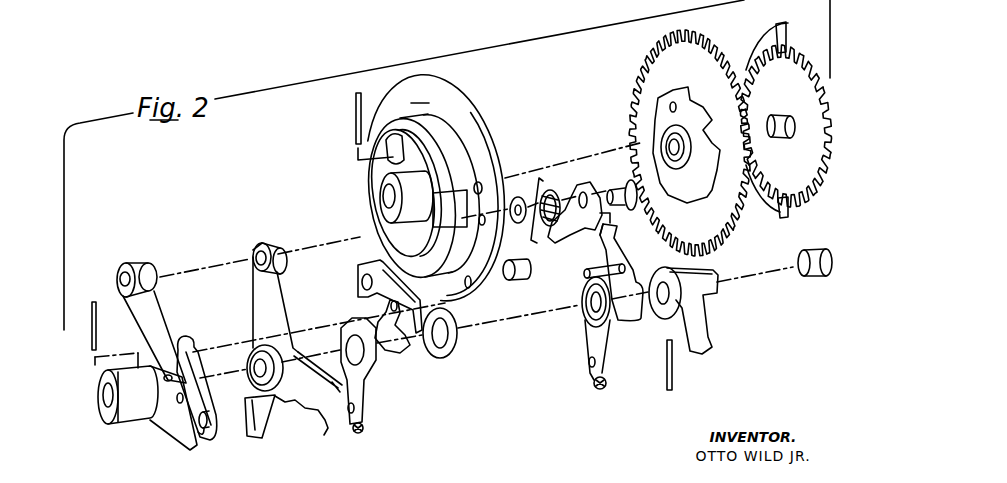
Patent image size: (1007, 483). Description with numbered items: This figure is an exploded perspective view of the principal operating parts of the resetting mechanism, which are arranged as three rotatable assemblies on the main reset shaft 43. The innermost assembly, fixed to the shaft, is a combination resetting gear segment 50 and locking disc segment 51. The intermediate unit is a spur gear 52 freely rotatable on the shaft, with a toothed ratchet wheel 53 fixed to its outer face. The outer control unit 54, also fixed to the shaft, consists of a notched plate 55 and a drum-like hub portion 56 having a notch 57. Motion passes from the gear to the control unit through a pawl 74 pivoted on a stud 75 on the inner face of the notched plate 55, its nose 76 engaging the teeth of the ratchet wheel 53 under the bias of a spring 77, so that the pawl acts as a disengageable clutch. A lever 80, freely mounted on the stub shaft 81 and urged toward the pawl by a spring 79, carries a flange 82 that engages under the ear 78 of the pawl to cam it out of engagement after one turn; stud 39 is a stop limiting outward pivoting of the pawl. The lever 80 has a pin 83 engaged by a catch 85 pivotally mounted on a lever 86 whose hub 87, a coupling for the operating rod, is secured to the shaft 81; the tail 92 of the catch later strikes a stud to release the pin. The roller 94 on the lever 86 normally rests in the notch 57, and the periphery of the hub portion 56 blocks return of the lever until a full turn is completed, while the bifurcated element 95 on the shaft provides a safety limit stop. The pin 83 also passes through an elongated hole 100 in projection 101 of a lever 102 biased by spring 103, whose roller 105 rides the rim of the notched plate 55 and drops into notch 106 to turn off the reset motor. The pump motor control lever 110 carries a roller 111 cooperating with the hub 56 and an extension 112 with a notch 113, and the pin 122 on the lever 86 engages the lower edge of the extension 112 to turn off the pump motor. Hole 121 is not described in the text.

The stud 39 is at (510, 262).
The main reset shaft 43 is at (783, 136).
The resetting gear segment 50 is at (805, 55).
The locking disc segment 51 is at (745, 35).
The spur gear 52 is at (634, 133).
The toothed ratchet wheel 53 is at (686, 198).
The control unit 54 is at (446, 187).
The notched plate 55 is at (496, 160).
The drum-like hub portion 56 is at (438, 133).
The notch 57 is at (421, 210).
The pawl 74 is at (572, 238).
The stud 75 is at (618, 184).
The nose 76 is at (534, 242).
The spring 77 is at (549, 189).
The ear 78 is at (606, 206).
The spring 79 is at (594, 385).
The lever 80 is at (628, 253).
The stub shaft 81 is at (810, 251).
The flange 82 is at (620, 234).
The pin 83 is at (592, 268).
The catch 85 is at (177, 347).
The lever 86 is at (134, 318).
The hub 87 is at (140, 425).
The tail 92 is at (212, 436).
The roller 94 is at (141, 263).
The bifurcated element 95 is at (716, 275).
The elongated hole 100 is at (410, 323).
The projection 101 is at (424, 336).
The lever 102 is at (369, 357).
The spring 103 is at (368, 428).
The roller 105 is at (378, 255).
The notch 106 is at (495, 233).
The pump motor control lever 110 is at (255, 298).
The roller 111 is at (272, 252).
The extension 112 is at (300, 365).
The notch 113 is at (332, 424).
The hole 121 is at (456, 276).
The pin 122 is at (204, 432).